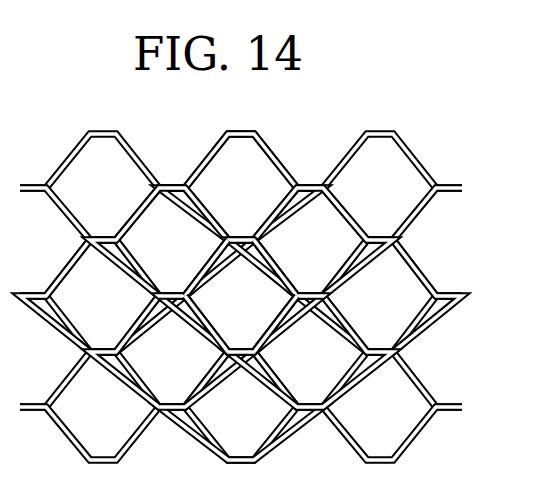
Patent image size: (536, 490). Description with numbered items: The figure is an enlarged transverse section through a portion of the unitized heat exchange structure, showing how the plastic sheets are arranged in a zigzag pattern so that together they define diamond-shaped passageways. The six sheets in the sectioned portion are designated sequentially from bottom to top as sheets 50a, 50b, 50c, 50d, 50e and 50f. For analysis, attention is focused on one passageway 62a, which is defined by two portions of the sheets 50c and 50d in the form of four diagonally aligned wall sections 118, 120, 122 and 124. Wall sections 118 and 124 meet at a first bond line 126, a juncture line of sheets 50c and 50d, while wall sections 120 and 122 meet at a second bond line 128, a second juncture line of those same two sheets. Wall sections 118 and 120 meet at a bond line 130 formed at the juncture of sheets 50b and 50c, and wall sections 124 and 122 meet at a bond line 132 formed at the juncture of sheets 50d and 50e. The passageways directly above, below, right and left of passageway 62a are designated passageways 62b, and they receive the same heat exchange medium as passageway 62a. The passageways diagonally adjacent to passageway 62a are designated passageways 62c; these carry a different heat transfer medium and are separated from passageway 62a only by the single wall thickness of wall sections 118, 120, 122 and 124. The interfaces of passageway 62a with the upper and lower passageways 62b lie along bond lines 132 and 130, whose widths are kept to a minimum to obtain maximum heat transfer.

The plastic sheet 50a is at (420, 427).
The plastic sheet 50b is at (425, 393).
The plastic sheet 50c is at (424, 313).
The plastic sheet 50d is at (421, 276).
The plastic sheet 50e is at (420, 208).
The plastic sheet 50f is at (414, 161).
The passageway 62a is at (263, 308).
The passageway 62b is at (261, 180).
The passageway 62c is at (172, 213).
The wall section 118 is at (201, 323).
The wall section 120 is at (273, 328).
The wall section 122 is at (279, 268).
The wall section 124 is at (207, 265).
The first bond line 126 is at (172, 292).
The second bond line 128 is at (312, 292).
The bond line 130 is at (238, 356).
The bond line 132 is at (238, 238).